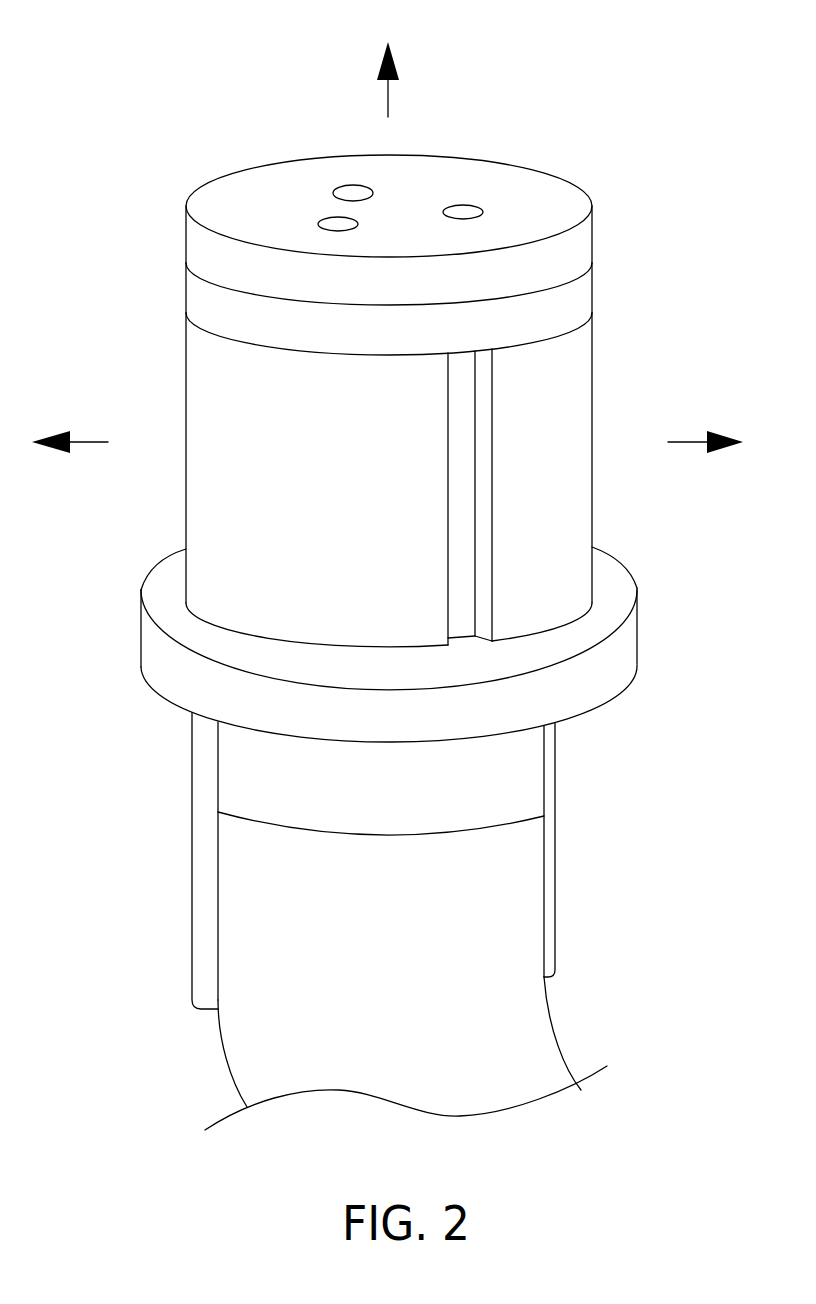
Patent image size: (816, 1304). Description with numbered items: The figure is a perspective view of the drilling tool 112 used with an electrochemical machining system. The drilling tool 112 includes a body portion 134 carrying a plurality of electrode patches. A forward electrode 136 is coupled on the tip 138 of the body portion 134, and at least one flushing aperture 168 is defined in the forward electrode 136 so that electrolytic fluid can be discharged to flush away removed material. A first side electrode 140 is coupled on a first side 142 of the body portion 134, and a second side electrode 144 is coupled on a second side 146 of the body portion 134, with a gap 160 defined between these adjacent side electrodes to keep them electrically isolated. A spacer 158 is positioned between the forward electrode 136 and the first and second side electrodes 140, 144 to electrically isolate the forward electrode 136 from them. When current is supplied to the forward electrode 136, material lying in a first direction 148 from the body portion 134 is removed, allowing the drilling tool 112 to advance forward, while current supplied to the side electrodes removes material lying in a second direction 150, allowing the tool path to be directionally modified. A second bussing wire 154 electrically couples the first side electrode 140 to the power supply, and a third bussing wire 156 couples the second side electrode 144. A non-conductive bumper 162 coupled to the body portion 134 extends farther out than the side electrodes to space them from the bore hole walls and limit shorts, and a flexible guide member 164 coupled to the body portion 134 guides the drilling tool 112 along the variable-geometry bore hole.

The drilling tool 112 is at (562, 104).
The body portion 134 is at (528, 762).
The forward electrode 136 is at (232, 187).
The tip 138 is at (246, 140).
The first side electrode 140 is at (203, 353).
The first side 142 is at (112, 257).
The second side electrode 144 is at (572, 358).
The second side 146 is at (618, 293).
The first direction 148 is at (388, 95).
The second direction 150 is at (88, 442).
The second bussing wire 154 is at (196, 861).
The third bussing wire 156 is at (551, 866).
The spacer 158 is at (592, 264).
The gap 160 is at (492, 530).
The non-conductive bumper 162 is at (630, 640).
The flexible guide member 164 is at (548, 1013).
The flushing aperture 168 is at (357, 222).